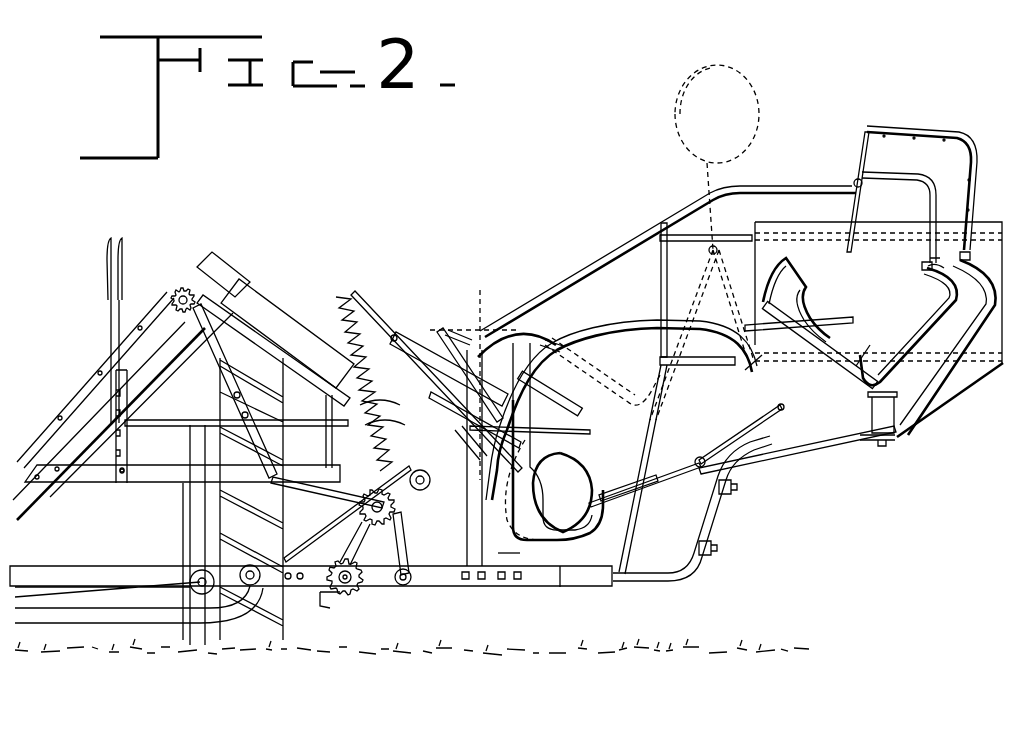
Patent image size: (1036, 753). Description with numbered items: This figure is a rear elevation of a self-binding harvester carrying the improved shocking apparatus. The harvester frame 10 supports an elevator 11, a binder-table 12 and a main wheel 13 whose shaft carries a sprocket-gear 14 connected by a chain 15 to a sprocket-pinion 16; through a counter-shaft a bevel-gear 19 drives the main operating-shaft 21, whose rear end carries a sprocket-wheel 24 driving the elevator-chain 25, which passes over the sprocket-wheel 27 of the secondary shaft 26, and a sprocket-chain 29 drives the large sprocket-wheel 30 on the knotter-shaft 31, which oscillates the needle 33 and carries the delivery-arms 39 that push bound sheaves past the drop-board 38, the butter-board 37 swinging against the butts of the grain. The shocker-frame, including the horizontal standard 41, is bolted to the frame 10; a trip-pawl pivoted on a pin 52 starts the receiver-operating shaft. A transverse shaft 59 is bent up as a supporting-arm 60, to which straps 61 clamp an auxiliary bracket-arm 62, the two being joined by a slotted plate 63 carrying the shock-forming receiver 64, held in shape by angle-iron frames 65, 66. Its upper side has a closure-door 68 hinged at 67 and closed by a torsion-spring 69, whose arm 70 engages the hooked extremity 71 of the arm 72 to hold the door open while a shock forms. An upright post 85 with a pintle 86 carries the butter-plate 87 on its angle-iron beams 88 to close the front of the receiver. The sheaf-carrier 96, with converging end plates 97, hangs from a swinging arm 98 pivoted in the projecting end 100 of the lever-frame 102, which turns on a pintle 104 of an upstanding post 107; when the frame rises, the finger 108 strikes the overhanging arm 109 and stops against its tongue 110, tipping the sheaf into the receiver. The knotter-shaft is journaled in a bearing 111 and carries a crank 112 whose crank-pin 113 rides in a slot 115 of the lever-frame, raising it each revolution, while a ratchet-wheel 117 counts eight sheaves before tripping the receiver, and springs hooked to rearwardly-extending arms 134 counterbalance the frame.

The frame 10 is at (84, 557).
The elevator 11 is at (203, 262).
The binder-table 12 is at (284, 348).
The main wheel 13 is at (228, 379).
The sprocket-gear 14 is at (199, 420).
The chain 15 is at (196, 447).
The sprocket-pinion 16 is at (170, 567).
The bevel-gear 19 is at (336, 598).
The main operating-shaft 21 is at (360, 592).
The sprocket-wheel 24 is at (320, 606).
The elevator-chain 25 is at (77, 397).
The secondary shaft 26 is at (406, 531).
The sprocket-wheel 27 is at (374, 522).
The sprocket-chain 29 is at (517, 330).
The sprocket-wheel 30 is at (548, 331).
The knotter-shaft 31 is at (483, 328).
The needle 33 is at (382, 399).
The butter-board 37 is at (257, 300).
The drop-board 38 is at (473, 463).
The delivery-arms 39 is at (580, 406).
The horizontal standard 41 is at (557, 586).
The pin 52 is at (430, 490).
The shaft 59 is at (648, 582).
The supporting-arm 60 is at (750, 448).
The straps 61 is at (737, 488).
The auxiliary bracket-arm 62 is at (815, 436).
The plate 63 is at (897, 421).
The shock-forming receiver 64 is at (930, 375).
The angle-iron frame 65 is at (928, 340).
The angle-iron frame 66 is at (856, 361).
The hinge 67 is at (922, 264).
The closure-door 68 is at (949, 137).
The torsion-spring 69 is at (935, 281).
The arm 70 is at (848, 253).
The hooked extremity 71 is at (868, 190).
The arm 72 is at (778, 192).
The upright post 85 is at (658, 421).
The pintle 86 is at (662, 302).
The butter-plate 87 is at (985, 376).
The angle-iron beams 88 is at (729, 236).
The sheaf-carrier 96 is at (585, 522).
The end plates 97 is at (780, 84).
The swinging arm 98 is at (612, 490).
The projecting end 100 is at (700, 457).
The lever-frame 102 is at (598, 400).
The pintle 104 is at (396, 333).
The upstanding post 107 is at (382, 576).
The finger 108 is at (775, 350).
The overhanging arm 109 is at (838, 321).
The tongue 110 is at (745, 371).
The bearing 111 is at (520, 554).
The crank 112 is at (532, 432).
The crank-pin 113 is at (426, 440).
The slot 115 is at (448, 334).
The ratchet-wheel 117 is at (341, 500).
The rearwardly-extending arms 134 is at (360, 294).